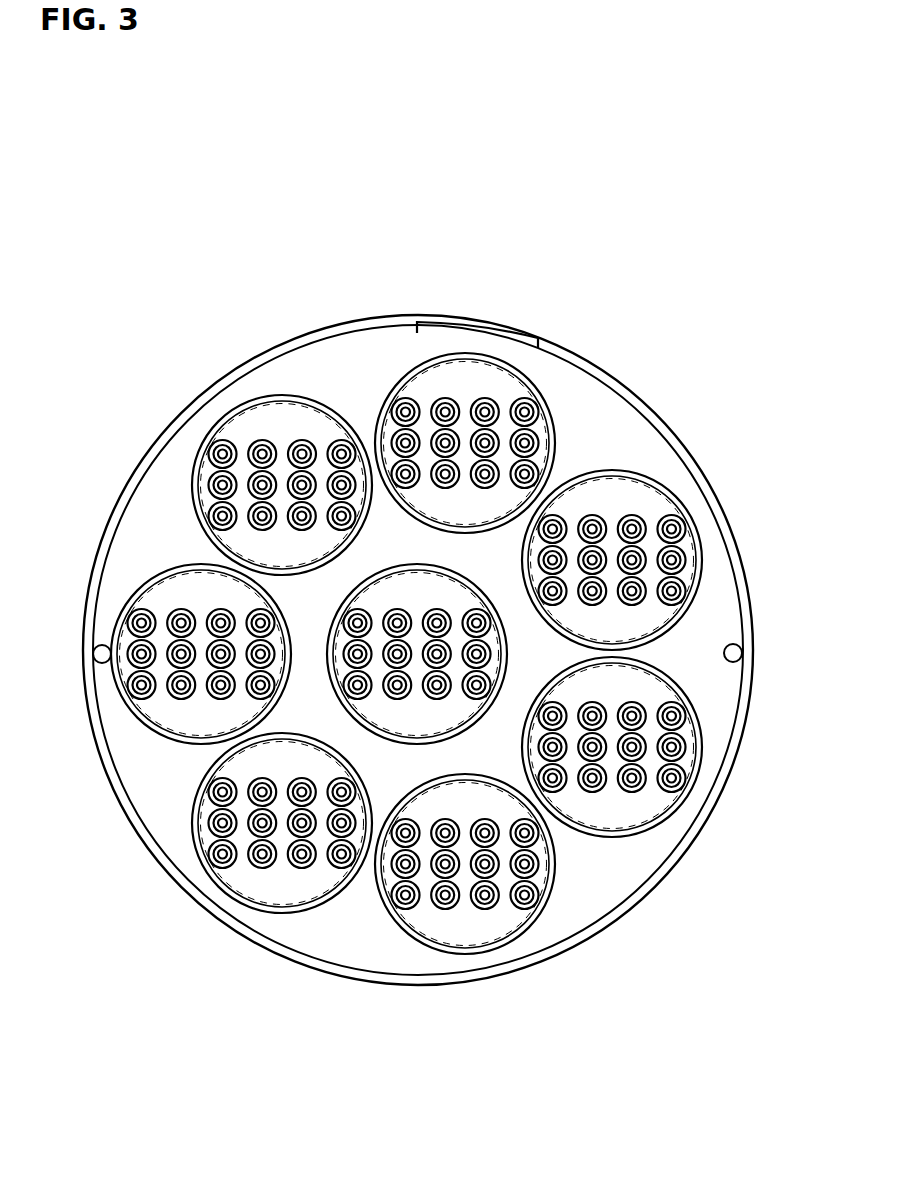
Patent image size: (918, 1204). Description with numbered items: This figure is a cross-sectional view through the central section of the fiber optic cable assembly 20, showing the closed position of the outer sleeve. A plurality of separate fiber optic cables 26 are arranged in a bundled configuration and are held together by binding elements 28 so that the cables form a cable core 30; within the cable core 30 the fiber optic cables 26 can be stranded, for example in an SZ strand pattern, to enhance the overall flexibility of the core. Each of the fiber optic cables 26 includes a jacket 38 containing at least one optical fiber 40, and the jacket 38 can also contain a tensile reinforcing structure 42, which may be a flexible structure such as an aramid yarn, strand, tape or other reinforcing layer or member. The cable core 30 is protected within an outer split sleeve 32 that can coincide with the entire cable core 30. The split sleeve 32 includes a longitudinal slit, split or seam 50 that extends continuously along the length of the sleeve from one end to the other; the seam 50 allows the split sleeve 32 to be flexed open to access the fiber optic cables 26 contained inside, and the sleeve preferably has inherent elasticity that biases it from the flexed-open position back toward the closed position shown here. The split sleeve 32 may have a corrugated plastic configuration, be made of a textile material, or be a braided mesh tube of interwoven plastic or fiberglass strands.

The fiber optic cable assembly 20 is at (417, 590).
The fiber optic cables 26 is at (395, 652).
The binding elements 28 is at (93, 648).
The cable core 30 is at (593, 899).
The split sleeve 32 is at (651, 412).
The jacket 38 is at (205, 438).
The optical fiber 40 is at (303, 440).
The tensile reinforcing structure 42 is at (240, 413).
The seam 50 is at (467, 323).